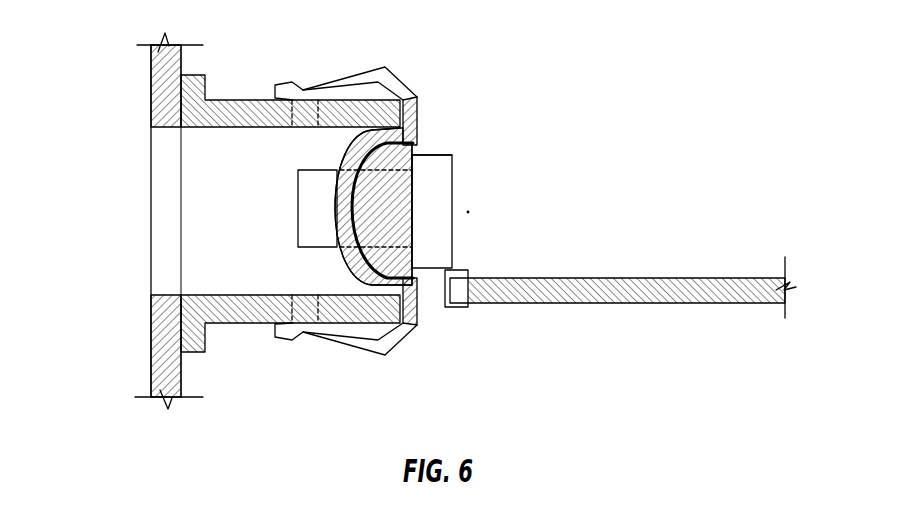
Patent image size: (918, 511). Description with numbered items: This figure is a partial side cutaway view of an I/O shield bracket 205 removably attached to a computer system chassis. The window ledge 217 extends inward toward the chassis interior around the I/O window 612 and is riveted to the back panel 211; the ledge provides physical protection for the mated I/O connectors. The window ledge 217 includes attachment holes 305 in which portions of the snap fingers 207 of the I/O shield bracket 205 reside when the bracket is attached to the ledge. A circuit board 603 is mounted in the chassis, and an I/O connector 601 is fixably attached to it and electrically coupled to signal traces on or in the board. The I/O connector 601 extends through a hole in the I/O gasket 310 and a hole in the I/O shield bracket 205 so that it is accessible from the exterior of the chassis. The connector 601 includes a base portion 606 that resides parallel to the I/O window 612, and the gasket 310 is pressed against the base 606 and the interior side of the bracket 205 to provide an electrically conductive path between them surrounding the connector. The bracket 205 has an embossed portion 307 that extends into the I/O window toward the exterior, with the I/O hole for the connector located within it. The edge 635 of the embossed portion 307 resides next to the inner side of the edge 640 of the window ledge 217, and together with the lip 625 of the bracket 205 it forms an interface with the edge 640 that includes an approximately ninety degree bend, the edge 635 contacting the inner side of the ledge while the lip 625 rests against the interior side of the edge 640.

The I/O shield bracket 205 is at (417, 310).
The snap fingers 207 is at (385, 67).
The back panel 211 is at (150, 357).
The window ledge 217 is at (227, 100).
The attachment holes 305 is at (290, 127).
The embossed portion 307 is at (342, 258).
The I/O gasket 310 is at (412, 153).
The I/O connector 601 is at (298, 200).
The circuit board 603 is at (662, 280).
The base portion 606 is at (441, 217).
The I/O window 612 is at (198, 240).
The lip 625 is at (417, 97).
The edge of embossed portion 635 is at (415, 132).
The edge of window ledge 640 is at (368, 124).